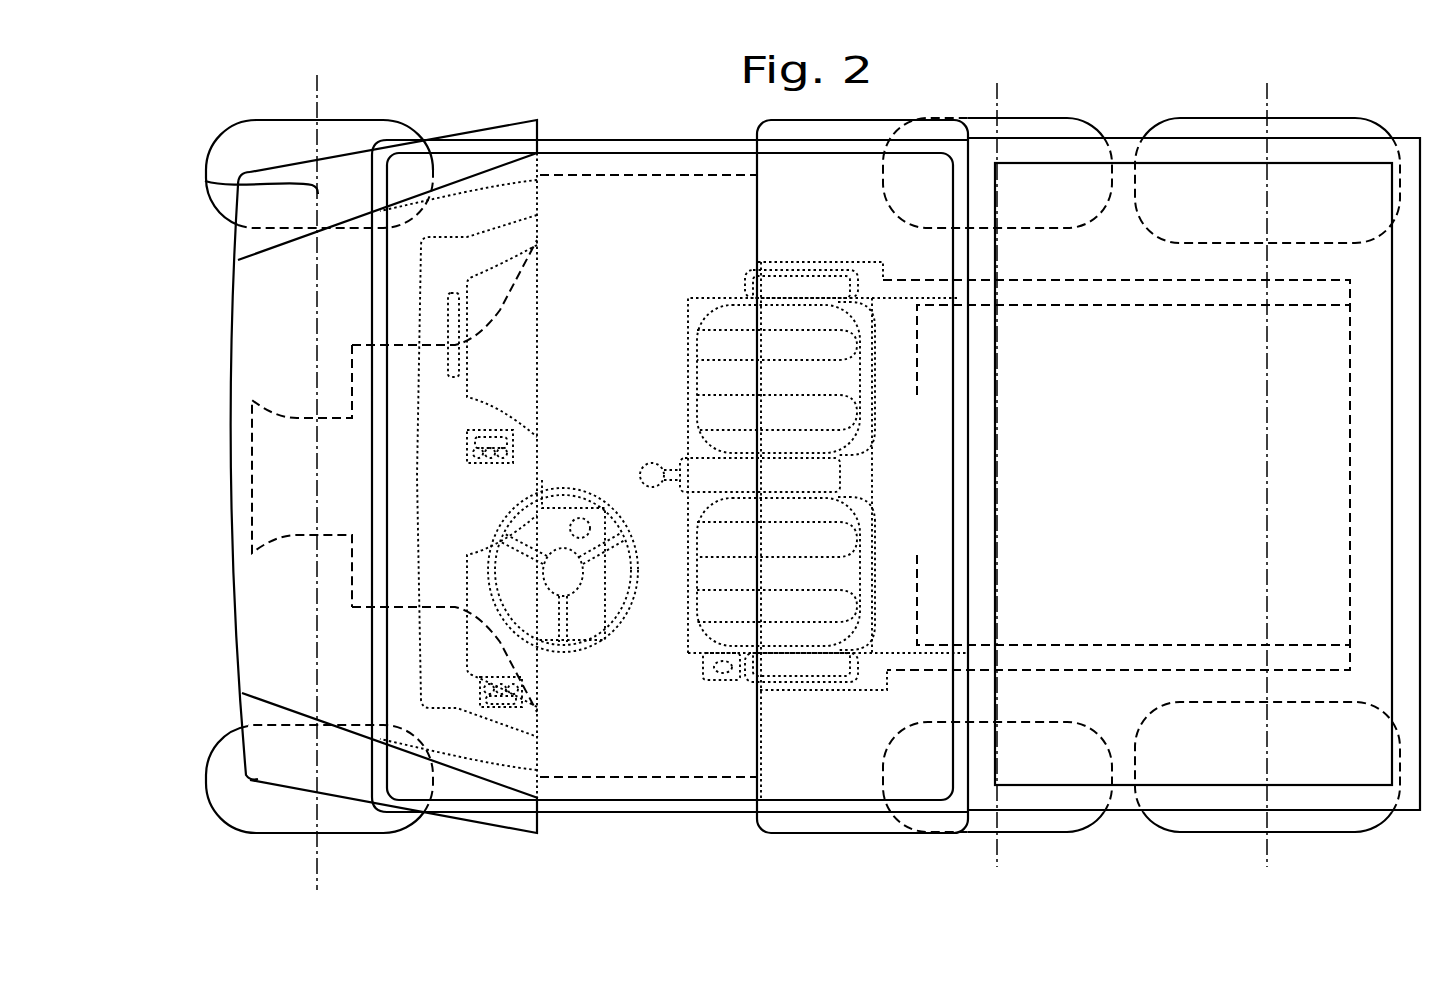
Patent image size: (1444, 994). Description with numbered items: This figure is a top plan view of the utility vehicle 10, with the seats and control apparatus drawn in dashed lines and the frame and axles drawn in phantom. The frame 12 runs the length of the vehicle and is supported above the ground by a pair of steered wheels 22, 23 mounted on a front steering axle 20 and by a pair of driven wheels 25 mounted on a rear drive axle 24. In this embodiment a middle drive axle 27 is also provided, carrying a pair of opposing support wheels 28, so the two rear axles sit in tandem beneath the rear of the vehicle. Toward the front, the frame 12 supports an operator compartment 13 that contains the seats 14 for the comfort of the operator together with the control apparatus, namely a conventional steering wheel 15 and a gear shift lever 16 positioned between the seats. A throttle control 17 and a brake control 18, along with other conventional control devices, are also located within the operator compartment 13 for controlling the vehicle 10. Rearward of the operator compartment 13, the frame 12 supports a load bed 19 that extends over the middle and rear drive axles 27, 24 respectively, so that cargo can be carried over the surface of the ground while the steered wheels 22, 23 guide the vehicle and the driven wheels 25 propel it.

The utility vehicle 10 is at (400, 92).
The frame 12 is at (708, 175).
The operator compartment 13 is at (672, 755).
The seats 14 is at (720, 313).
The steering wheel 15 is at (560, 490).
The gear shift lever 16 is at (652, 462).
The throttle control 17 is at (505, 430).
The brake control 18 is at (540, 698).
The load bed 19 is at (1113, 833).
The front steering axle 20 is at (215, 202).
The steered wheel 22 is at (398, 122).
The steered wheel 23 is at (343, 834).
The rear drive axle 24 is at (1268, 198).
The driven wheels 25 is at (1197, 118).
The middle drive axle 27 is at (997, 227).
The support wheels 28 is at (1048, 118).